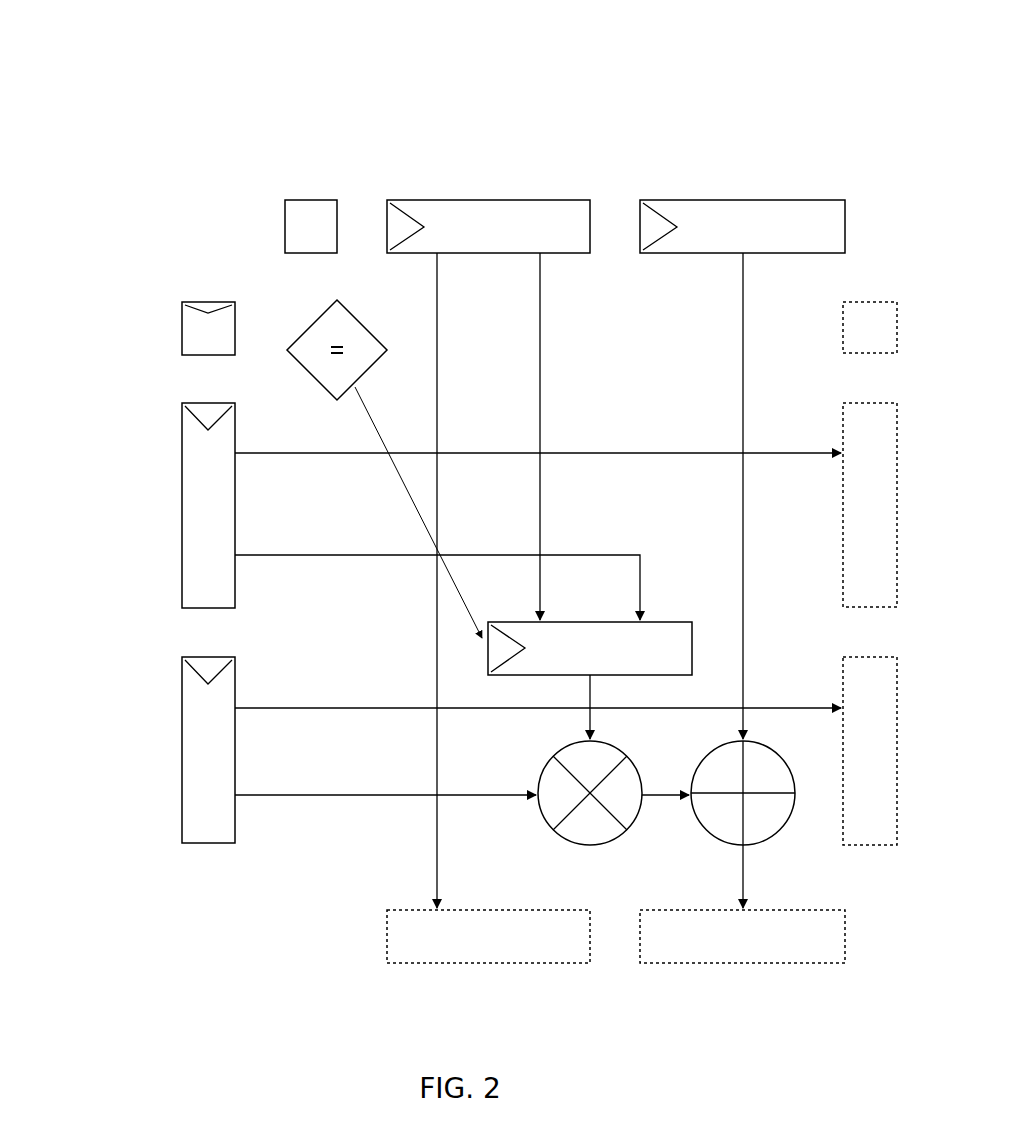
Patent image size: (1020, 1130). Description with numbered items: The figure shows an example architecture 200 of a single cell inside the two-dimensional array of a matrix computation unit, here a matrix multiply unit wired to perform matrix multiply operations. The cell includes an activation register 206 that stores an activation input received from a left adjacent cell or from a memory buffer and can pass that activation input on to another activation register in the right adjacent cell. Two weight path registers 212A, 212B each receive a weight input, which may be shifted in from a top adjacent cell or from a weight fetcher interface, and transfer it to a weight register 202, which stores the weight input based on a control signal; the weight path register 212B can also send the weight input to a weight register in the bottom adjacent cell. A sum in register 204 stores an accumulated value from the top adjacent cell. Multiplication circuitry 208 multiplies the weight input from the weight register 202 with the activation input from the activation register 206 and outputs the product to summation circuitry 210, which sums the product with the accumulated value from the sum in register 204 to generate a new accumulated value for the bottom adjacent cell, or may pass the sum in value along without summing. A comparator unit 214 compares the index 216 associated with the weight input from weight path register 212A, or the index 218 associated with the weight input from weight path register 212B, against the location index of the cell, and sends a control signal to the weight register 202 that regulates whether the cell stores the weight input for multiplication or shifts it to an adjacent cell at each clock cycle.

The architecture 200 is at (814, 60).
The weight register 202 is at (702, 649).
The sum in register 204 is at (740, 190).
The activation register 206 is at (176, 750).
The multiplication circuitry 208 is at (544, 828).
The summation circuitry 210 is at (698, 824).
The weight path register 212A is at (176, 522).
The weight path register 212B is at (486, 190).
The comparator unit 214 is at (302, 325).
The index 216 is at (176, 325).
The index 218 is at (281, 226).